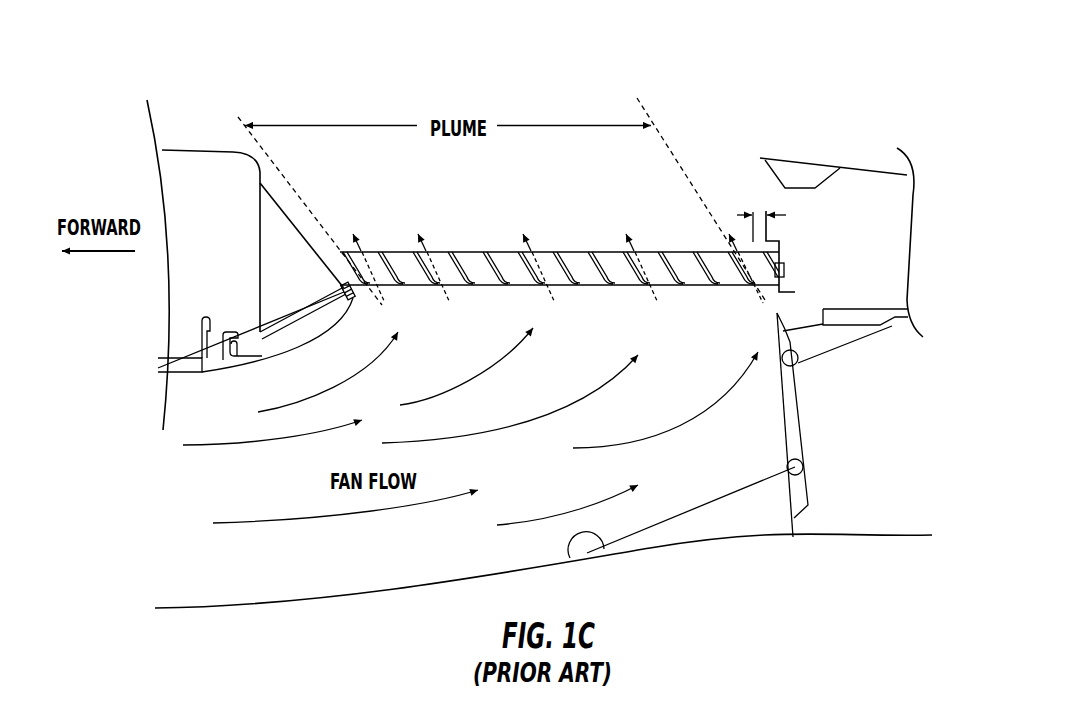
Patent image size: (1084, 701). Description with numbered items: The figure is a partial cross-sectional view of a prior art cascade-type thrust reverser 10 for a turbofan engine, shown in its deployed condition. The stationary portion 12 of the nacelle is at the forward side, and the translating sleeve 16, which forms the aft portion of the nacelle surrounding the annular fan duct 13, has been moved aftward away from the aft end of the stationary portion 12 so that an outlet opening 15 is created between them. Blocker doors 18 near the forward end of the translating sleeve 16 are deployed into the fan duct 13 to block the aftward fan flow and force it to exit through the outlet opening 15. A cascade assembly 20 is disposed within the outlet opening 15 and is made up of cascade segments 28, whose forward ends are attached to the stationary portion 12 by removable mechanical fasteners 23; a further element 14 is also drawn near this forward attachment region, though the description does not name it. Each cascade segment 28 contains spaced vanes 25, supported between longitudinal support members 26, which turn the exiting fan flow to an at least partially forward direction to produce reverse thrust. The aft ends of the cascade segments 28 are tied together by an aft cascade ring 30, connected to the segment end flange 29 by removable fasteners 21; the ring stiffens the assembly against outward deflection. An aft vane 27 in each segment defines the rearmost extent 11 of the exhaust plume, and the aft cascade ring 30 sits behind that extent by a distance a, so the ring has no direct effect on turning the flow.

The cascade-type thrust reverser 10 is at (700, 73).
The rearmost extent of the exhaust plume 11 is at (665, 138).
The stationary portion of the nacelle 12 is at (250, 265).
The annular fan duct 13 is at (527, 408).
The actuator 14 is at (352, 335).
The outlet opening 15 is at (492, 196).
The translating sleeve 16 is at (808, 160).
The blocker doors 18 is at (800, 410).
The cascade assembly 20 is at (568, 250).
The removable fasteners 21 is at (785, 272).
The removable mechanical fasteners 23 is at (342, 284).
The vanes 25 is at (500, 252).
The longitudinal support members 26 is at (494, 280).
The aft vane 27 is at (776, 264).
The cascade segments 28 is at (463, 252).
The end flange 29 is at (772, 276).
The aft cascade ring 30 is at (780, 244).